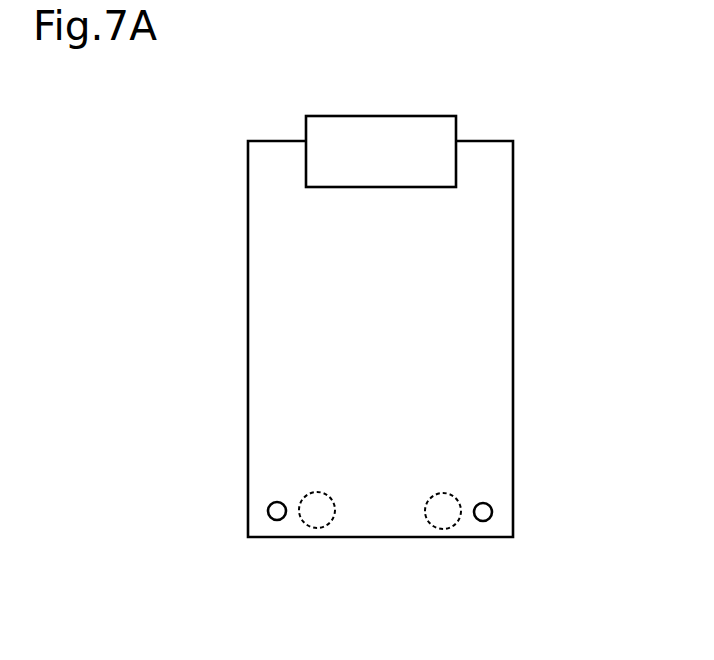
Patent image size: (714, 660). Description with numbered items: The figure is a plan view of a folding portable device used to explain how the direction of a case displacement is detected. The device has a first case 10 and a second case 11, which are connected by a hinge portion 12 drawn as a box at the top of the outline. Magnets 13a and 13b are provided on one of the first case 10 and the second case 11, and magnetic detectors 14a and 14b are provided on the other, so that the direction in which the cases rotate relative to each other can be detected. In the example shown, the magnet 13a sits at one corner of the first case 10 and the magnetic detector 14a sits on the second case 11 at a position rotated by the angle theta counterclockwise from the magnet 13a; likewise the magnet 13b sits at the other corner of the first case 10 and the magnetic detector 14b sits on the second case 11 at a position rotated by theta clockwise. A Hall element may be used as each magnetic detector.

The first case 10 is at (442, 339).
The second case 11 is at (513, 220).
The hinge portion 12 is at (397, 130).
The magnet 13a is at (268, 506).
The magnet 13b is at (493, 510).
The magnetic detector 14a is at (322, 527).
The magnetic detector 14b is at (445, 528).